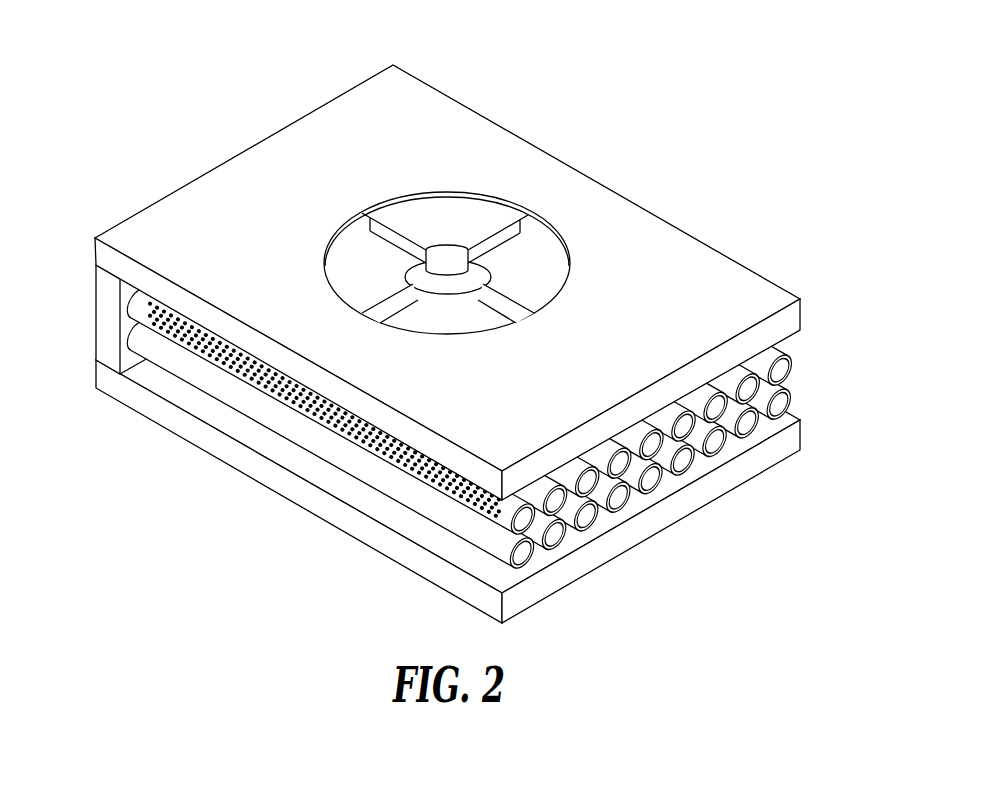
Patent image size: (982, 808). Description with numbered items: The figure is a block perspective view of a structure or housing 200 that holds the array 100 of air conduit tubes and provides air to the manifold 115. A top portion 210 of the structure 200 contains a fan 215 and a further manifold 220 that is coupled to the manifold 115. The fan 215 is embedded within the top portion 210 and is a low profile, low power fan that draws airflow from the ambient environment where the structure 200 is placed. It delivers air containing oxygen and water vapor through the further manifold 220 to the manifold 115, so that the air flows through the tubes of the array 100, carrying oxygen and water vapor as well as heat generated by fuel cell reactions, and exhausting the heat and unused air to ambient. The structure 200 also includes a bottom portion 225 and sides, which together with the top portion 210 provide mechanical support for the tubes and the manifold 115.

The array 100 is at (462, 344).
The manifold 115 is at (96, 310).
The structure 200 is at (447, 282).
The top portion 210 is at (252, 165).
The fan 215 is at (342, 258).
The further manifold 220 is at (257, 341).
The bottom portion 225 is at (317, 500).